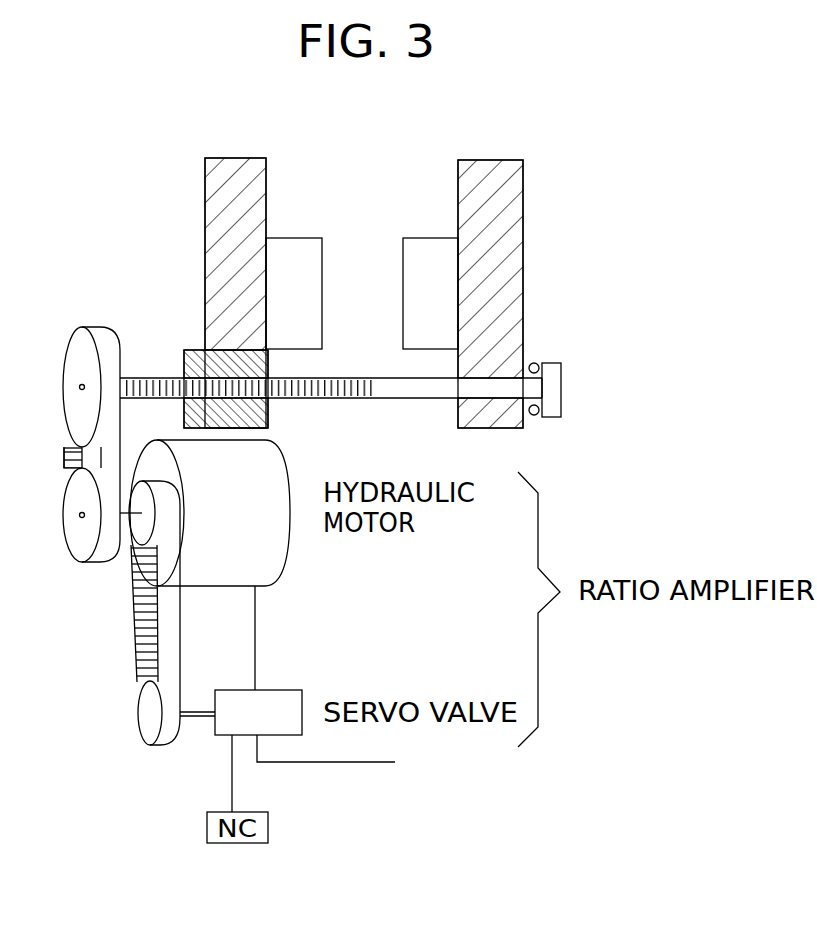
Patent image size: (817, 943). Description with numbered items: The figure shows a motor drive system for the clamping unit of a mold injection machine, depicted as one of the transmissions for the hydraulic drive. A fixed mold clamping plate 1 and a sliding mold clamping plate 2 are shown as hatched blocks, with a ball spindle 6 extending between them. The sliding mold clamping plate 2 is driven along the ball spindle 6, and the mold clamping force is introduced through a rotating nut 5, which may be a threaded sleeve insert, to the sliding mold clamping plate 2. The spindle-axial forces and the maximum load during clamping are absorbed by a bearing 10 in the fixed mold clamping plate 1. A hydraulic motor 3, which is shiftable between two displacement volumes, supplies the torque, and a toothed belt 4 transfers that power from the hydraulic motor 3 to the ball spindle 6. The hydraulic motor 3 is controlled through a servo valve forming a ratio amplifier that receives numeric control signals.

The fixed mold clamping plate 1 is at (490, 195).
The sliding mold clamping plate 2 is at (227, 185).
The hydraulic motor 3 is at (238, 458).
The toothed belt 4 is at (103, 337).
The rotating nuts 5 is at (183, 348).
The ball spindles 6 is at (330, 376).
The bearing 10 is at (537, 360).